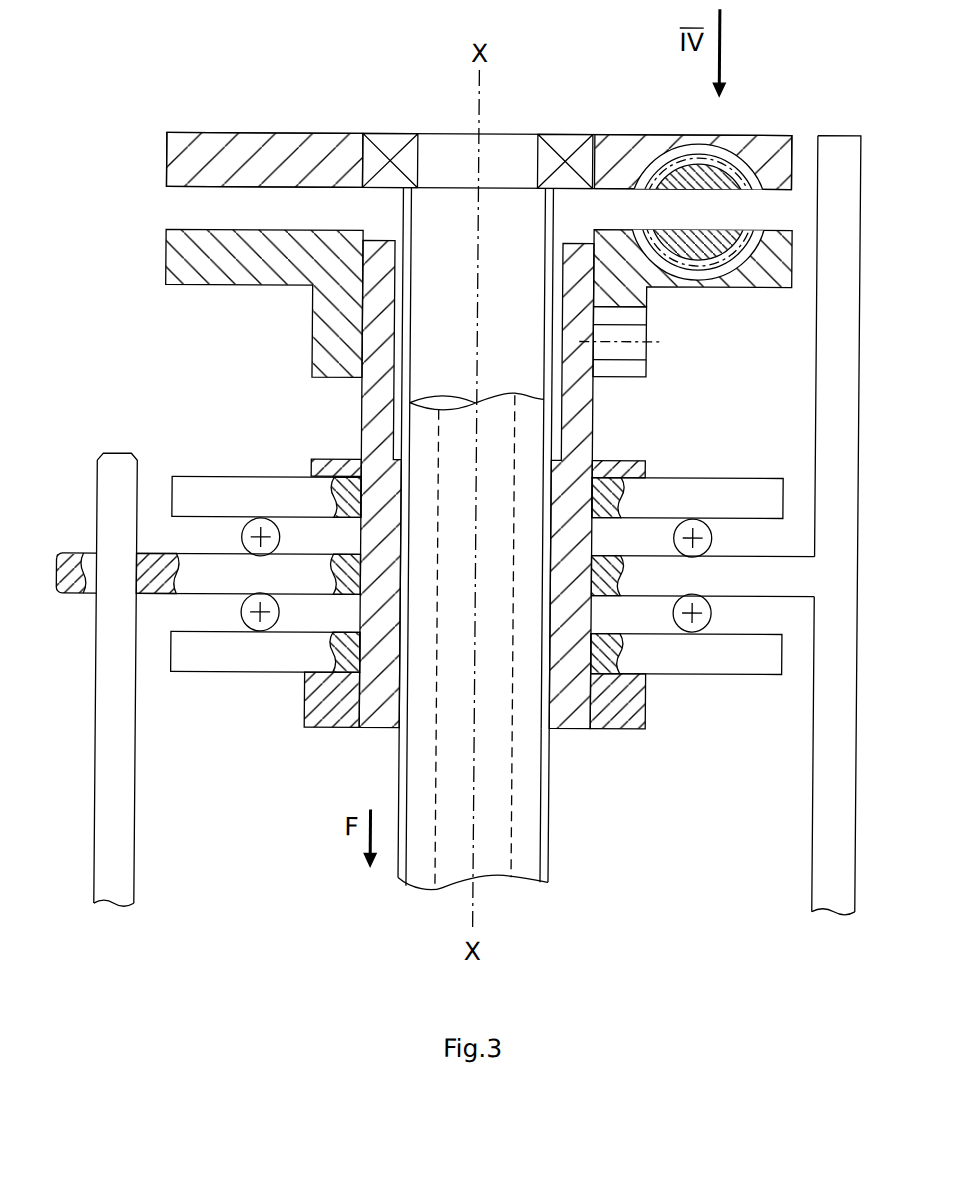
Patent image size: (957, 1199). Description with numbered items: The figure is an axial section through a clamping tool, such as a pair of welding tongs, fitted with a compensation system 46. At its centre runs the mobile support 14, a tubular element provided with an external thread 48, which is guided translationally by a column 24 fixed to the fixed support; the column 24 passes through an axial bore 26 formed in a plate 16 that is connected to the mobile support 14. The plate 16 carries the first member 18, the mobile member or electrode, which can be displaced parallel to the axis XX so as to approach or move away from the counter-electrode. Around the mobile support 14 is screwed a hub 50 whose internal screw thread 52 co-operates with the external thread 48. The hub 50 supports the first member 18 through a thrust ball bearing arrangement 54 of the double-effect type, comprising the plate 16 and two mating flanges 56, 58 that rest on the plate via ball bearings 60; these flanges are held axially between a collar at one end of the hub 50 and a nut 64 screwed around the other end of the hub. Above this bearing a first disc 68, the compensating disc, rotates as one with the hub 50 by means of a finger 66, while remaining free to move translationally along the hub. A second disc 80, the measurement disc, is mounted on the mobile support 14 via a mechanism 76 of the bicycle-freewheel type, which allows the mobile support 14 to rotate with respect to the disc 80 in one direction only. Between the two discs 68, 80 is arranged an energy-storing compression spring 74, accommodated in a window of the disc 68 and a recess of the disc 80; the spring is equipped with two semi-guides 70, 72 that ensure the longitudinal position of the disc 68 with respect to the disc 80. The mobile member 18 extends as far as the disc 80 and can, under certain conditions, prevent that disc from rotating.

The mobile support 14 is at (399, 872).
The plate 16 is at (795, 554).
The first member 18 is at (813, 870).
The column 24 is at (141, 812).
The axial bore 26 is at (108, 595).
The compensation system 46 is at (668, 467).
The external thread 48 is at (553, 870).
The hub 50 is at (583, 457).
The internal screw thread 52 is at (546, 724).
The thrust ball bearing arrangement 54 is at (791, 487).
The mating flange 56 is at (198, 486).
The mating flange 58 is at (203, 664).
The ball bearings 60 is at (242, 538).
The nut 64 is at (306, 722).
The finger 66 is at (640, 332).
The first disc 68 is at (318, 345).
The semi-guide 70 is at (704, 230).
The semi-guide 72 is at (687, 191).
The energy-storing spring 74 is at (744, 257).
The mechanism 76 is at (565, 133).
The second disc 80 is at (279, 131).